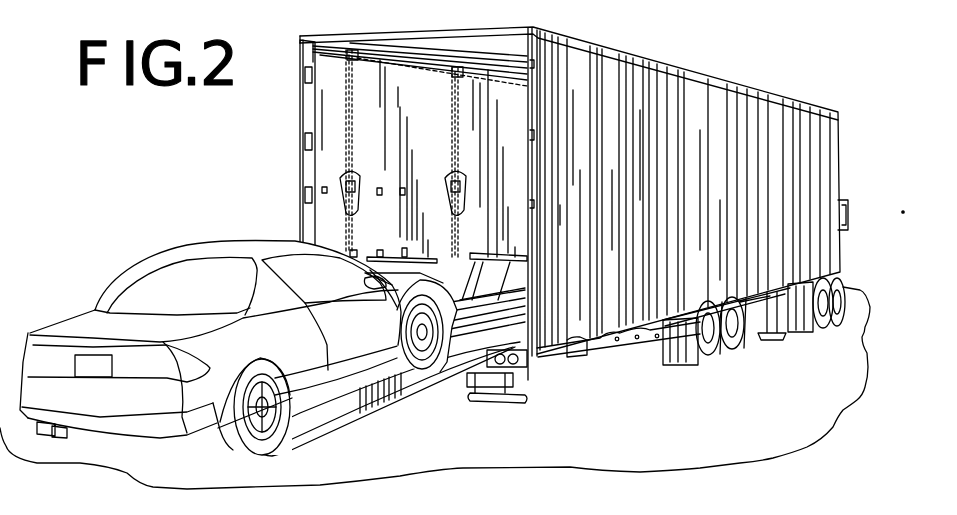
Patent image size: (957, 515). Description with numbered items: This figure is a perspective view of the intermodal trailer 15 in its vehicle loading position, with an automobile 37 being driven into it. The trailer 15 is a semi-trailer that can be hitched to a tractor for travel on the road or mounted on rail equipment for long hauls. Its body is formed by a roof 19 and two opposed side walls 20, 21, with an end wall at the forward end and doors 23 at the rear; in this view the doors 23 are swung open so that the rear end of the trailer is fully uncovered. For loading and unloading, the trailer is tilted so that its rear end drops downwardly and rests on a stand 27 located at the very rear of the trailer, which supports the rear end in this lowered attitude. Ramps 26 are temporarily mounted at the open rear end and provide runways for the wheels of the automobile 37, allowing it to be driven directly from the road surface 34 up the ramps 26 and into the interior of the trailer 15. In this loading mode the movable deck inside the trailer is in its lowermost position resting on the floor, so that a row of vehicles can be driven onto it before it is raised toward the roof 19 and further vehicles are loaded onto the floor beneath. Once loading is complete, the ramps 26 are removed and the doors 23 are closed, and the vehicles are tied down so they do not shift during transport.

The intermodal trailer 15 is at (718, 72).
The roof 19 is at (477, 50).
The side wall 20 is at (368, 93).
The side wall 21 is at (627, 100).
The doors 23 is at (300, 62).
The ramps 26 is at (357, 388).
The stand 27 is at (493, 400).
The road surface 34 is at (330, 458).
The automobile 37 is at (200, 390).